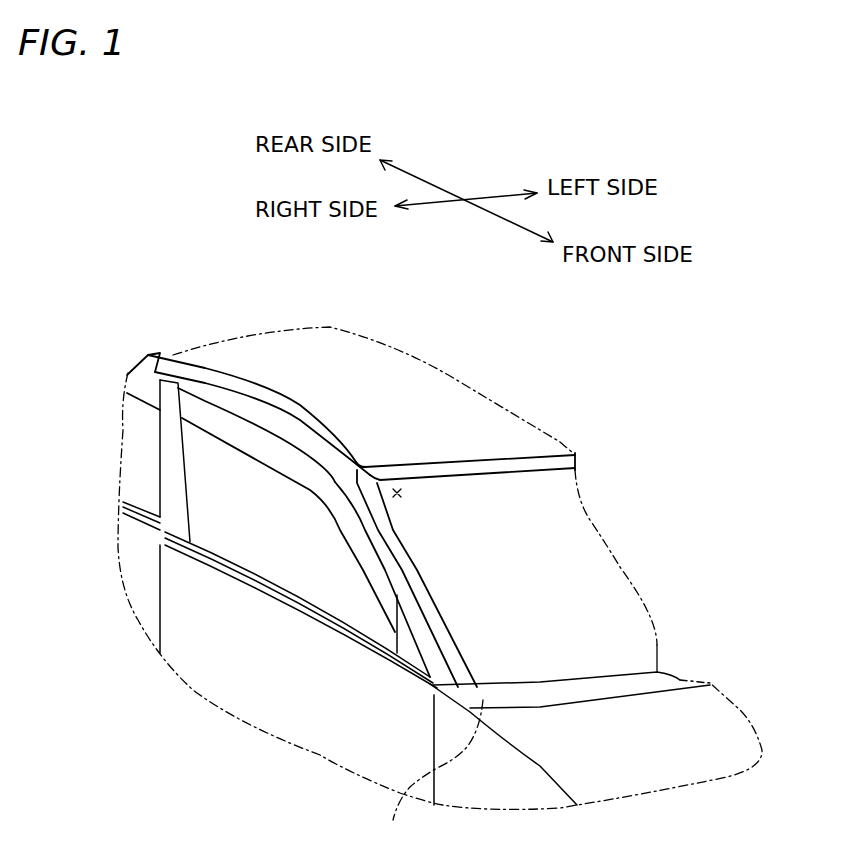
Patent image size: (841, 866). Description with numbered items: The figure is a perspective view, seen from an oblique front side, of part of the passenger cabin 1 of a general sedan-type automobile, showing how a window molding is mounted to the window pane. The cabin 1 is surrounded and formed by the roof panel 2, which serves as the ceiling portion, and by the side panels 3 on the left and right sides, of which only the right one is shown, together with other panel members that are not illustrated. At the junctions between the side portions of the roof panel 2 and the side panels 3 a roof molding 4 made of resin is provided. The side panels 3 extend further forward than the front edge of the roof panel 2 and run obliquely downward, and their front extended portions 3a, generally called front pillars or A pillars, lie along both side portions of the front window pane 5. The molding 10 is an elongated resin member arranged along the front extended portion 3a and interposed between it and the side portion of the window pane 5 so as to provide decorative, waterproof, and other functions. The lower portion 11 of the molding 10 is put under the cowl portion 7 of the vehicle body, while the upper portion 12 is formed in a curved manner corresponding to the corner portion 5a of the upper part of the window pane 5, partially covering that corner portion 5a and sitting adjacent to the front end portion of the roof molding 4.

The cabin 1 is at (220, 315).
The roof panel 2 is at (405, 387).
The side panel 3 is at (152, 373).
The front extended portion 3a is at (383, 553).
The roof molding 4 is at (277, 398).
The window pane 5 is at (572, 542).
The corner portion 5a is at (402, 493).
The cowl portion 7 is at (597, 690).
The molding 10 is at (432, 620).
The lower portion 11 is at (394, 814).
The upper portion 12 is at (372, 472).